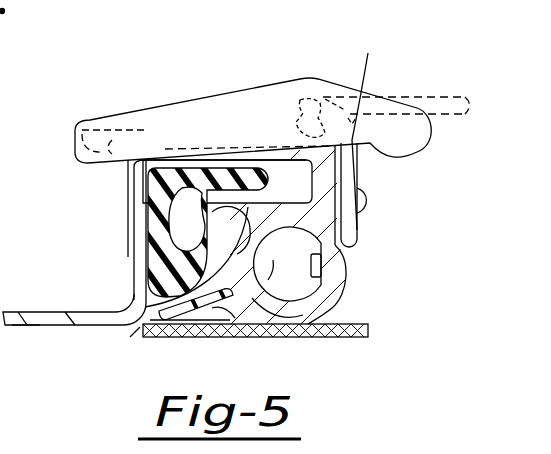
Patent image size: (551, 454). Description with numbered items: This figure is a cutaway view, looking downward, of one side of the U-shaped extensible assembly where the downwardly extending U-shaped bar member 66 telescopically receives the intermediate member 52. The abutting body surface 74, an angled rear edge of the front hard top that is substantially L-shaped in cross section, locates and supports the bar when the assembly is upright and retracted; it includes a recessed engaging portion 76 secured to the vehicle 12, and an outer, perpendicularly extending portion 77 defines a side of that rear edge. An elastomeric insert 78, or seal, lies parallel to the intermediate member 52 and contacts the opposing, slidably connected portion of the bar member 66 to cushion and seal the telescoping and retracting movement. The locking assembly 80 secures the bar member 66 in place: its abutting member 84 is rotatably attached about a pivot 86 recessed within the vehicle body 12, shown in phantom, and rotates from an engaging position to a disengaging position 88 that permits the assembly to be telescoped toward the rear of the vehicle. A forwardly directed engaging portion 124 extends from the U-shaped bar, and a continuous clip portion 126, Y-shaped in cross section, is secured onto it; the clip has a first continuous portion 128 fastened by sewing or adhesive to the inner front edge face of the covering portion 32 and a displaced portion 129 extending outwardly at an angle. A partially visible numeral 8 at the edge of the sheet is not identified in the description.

The vehicle body 12 is at (270, 82).
The recessed engaging portion 76 is at (98, 138).
The elastomeric insert 78 is at (170, 180).
The pivot 86 is at (314, 100).
The abutting member 84 is at (369, 127).
The disengaging position 88 is at (430, 97).
The locking assembly 80 is at (358, 167).
The abutting body surface 74 is at (140, 220).
The intermediate member 52 is at (147, 297).
The displaced portion 129 is at (287, 264).
The U-shaped bar member 66 is at (335, 306).
The outer perpendicularly extending portion 77 is at (47, 326).
The partial numeral 8 is at (6, 273).
The continuous clip portion 126 is at (140, 327).
The first continuous portion 128 is at (193, 337).
The forwardly directed engaging portion 124 is at (240, 327).
The covering portion 32 is at (330, 337).